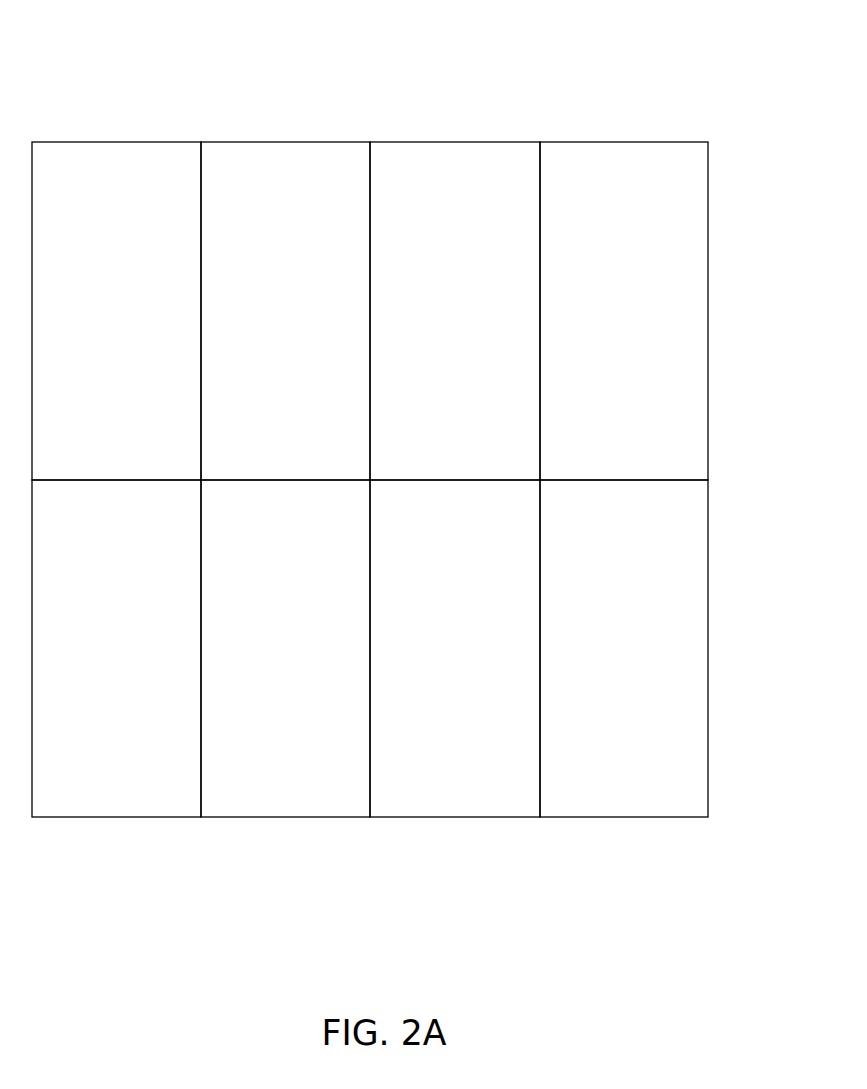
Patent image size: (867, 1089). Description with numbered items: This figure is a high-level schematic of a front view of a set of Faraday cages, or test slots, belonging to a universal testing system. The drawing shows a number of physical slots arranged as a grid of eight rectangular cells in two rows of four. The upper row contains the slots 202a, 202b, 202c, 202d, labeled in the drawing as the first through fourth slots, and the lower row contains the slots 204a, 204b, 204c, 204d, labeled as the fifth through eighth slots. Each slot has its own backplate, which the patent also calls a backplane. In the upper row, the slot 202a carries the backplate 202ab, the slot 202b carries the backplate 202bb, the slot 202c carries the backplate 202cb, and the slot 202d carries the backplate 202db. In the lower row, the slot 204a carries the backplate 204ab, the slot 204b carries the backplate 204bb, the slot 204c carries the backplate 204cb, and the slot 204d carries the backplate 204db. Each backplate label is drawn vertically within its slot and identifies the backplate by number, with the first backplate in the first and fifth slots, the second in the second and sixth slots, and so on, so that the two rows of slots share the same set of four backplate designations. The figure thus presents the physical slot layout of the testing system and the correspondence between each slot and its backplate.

The slot 202a is at (114, 142).
The backplate 202ab is at (115, 213).
The slot 202b is at (283, 142).
The backplate 202bb is at (284, 213).
The slot 202c is at (452, 142).
The backplate label for first row slot 3 202cb is at (453, 213).
The slot 202d is at (622, 142).
The backplate 202db is at (623, 213).
The slot 204a is at (98, 817).
The backplate 204ab is at (115, 551).
The slot 204b is at (277, 817).
The backplate 204bb is at (284, 551).
The slot 204c is at (443, 817).
The backplate label for second row slot 7 204cb is at (453, 551).
The slot 204d is at (633, 817).
The backplate 204db is at (623, 551).